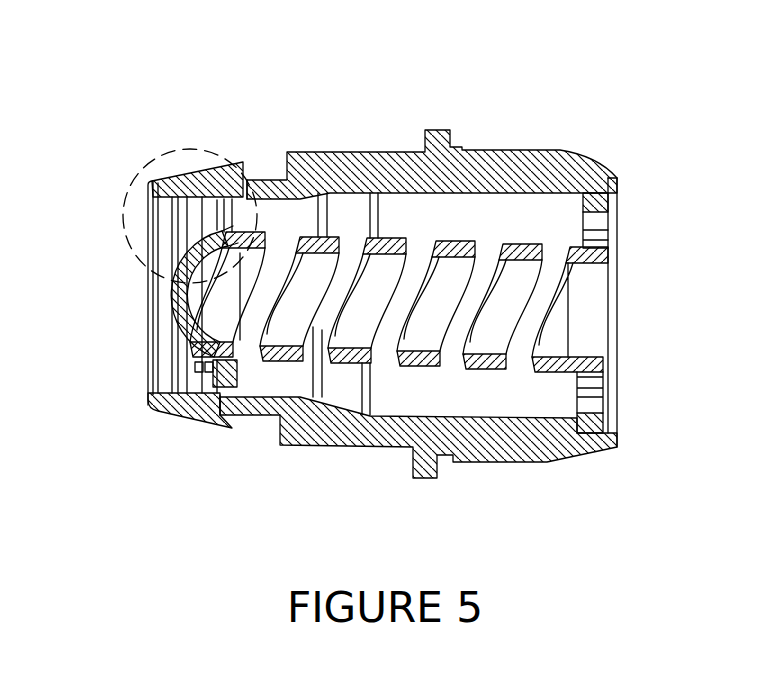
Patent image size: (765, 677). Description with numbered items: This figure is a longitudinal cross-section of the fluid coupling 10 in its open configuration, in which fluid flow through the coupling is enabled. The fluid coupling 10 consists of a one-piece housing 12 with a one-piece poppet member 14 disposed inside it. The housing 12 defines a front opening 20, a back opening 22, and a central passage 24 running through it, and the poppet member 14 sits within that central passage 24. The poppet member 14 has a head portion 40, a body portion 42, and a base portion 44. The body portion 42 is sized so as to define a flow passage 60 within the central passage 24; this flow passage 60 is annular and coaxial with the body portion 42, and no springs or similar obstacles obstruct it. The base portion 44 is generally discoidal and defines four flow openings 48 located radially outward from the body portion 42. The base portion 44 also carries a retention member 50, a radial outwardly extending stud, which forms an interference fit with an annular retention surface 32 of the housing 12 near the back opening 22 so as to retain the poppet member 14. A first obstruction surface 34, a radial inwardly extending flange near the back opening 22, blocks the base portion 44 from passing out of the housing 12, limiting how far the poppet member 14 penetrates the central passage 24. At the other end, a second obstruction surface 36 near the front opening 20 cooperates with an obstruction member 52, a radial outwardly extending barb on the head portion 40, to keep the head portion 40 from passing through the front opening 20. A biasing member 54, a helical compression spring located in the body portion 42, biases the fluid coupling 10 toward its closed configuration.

The fluid coupling 10 is at (396, 116).
The housing 12 is at (322, 140).
The poppet member 14 is at (267, 383).
The front opening 20 is at (135, 358).
The back opening 22 is at (631, 265).
The central passage 24 is at (366, 295).
The retention surface 32 is at (602, 180).
The first obstruction surface 34 is at (568, 428).
The second obstruction surface 36 is at (166, 404).
The head portion 40 is at (159, 297).
The body portion 42 is at (468, 234).
The base portion 44 is at (618, 322).
The flow openings 48 is at (621, 221).
The retention member 50 is at (628, 176).
The obstruction member 52 is at (213, 400).
The biasing member 54 is at (428, 318).
The flow passage 60 is at (522, 218).